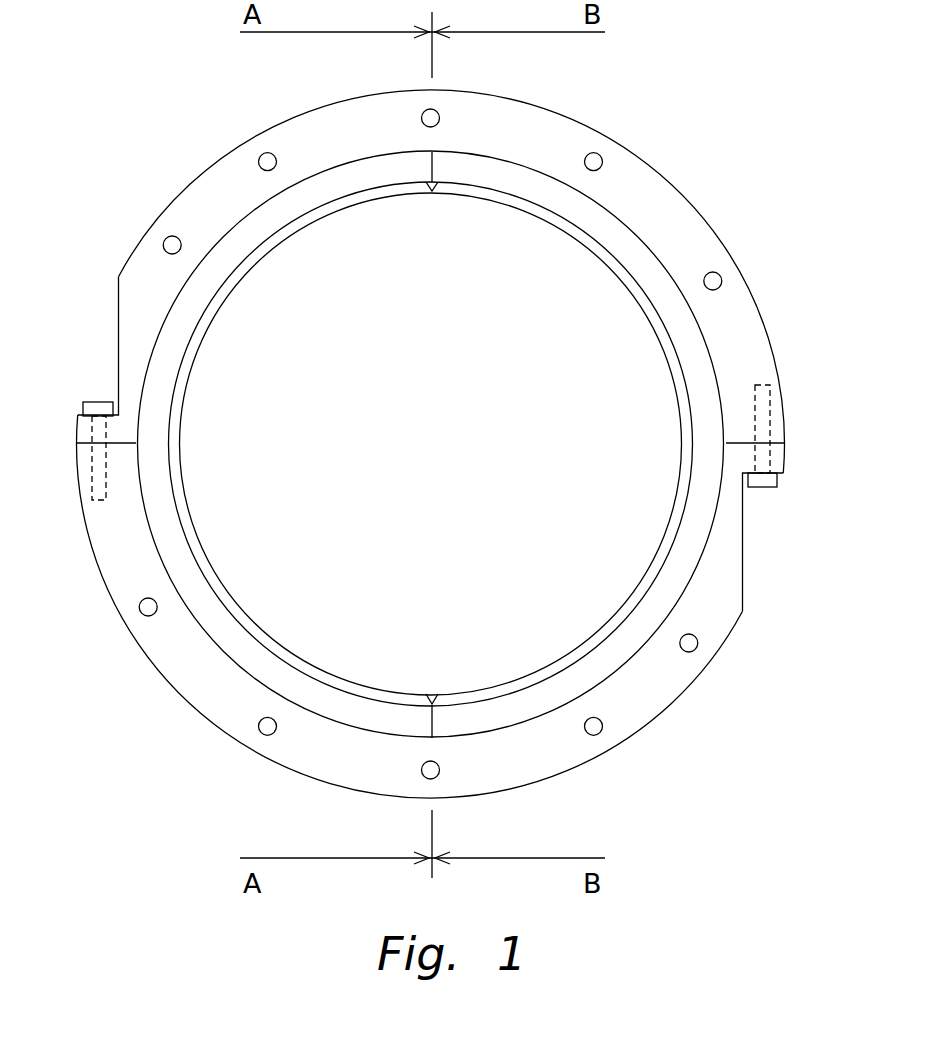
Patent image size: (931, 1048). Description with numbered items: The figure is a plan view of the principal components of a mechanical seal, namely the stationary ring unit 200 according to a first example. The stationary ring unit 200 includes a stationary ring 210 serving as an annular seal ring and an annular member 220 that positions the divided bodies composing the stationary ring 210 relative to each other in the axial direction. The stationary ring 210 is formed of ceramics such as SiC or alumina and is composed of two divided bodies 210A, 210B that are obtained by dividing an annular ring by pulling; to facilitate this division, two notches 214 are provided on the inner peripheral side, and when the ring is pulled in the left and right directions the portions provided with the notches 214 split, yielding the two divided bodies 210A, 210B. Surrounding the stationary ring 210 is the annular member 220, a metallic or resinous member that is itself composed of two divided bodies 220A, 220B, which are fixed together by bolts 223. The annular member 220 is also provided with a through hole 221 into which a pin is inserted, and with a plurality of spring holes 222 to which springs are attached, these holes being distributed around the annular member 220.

The stationary ring unit 200 is at (719, 70).
The annular member 220 is at (706, 182).
The divided body 220A is at (752, 318).
The divided body 220B is at (722, 632).
The spring holes 222 is at (437, 110).
The through hole 221 is at (436, 777).
The bolts 223 is at (97, 408).
The stationary ring 210 is at (577, 265).
The divided body 210A is at (688, 338).
The divided body 210B is at (153, 484).
The notches 214 is at (432, 192).